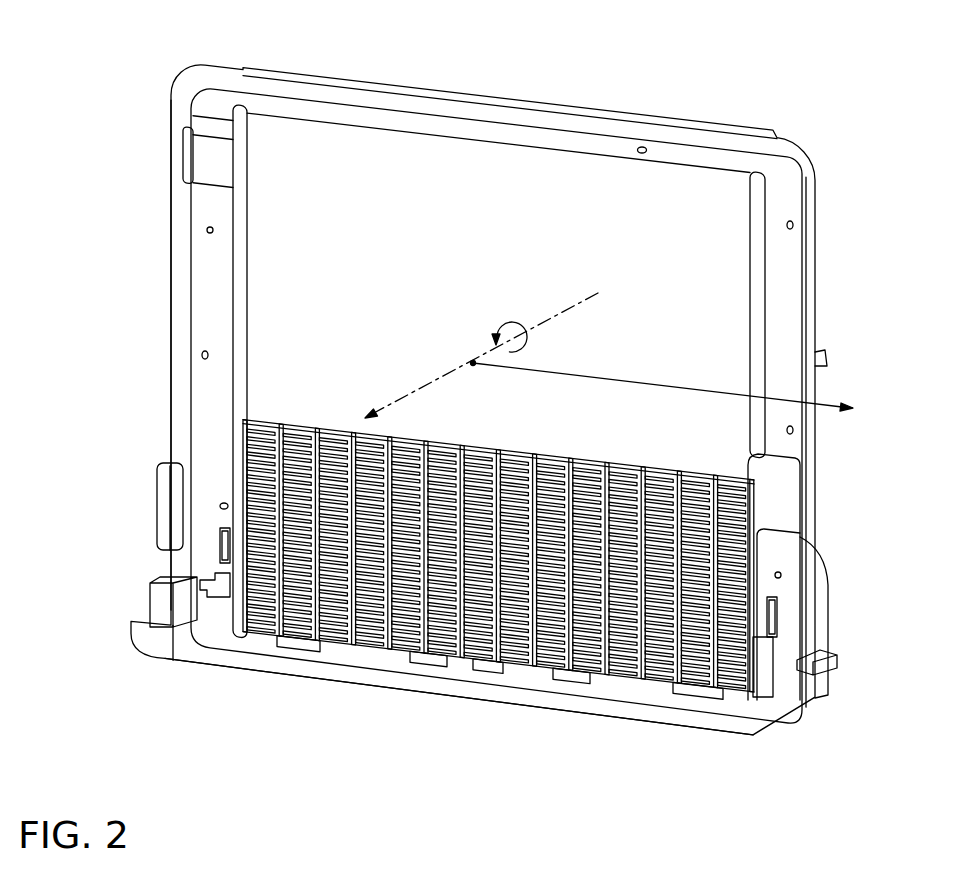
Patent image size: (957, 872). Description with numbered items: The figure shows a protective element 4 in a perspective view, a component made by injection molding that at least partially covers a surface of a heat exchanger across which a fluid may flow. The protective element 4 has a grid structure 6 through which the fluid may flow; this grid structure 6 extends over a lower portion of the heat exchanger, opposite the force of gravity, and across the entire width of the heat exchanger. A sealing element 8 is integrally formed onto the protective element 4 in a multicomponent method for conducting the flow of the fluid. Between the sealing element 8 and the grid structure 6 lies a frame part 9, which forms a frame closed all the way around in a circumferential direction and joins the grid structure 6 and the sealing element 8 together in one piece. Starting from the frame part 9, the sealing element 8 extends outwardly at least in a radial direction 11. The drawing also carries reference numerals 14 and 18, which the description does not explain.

The protective element 4 is at (670, 105).
The grid structure 6 is at (263, 448).
The sealing element 8 is at (176, 146).
The frame part 9 is at (407, 123).
The radial direction 11 is at (830, 407).
The rotation axis 14 is at (435, 383).
The latching bracket 18 is at (218, 505).